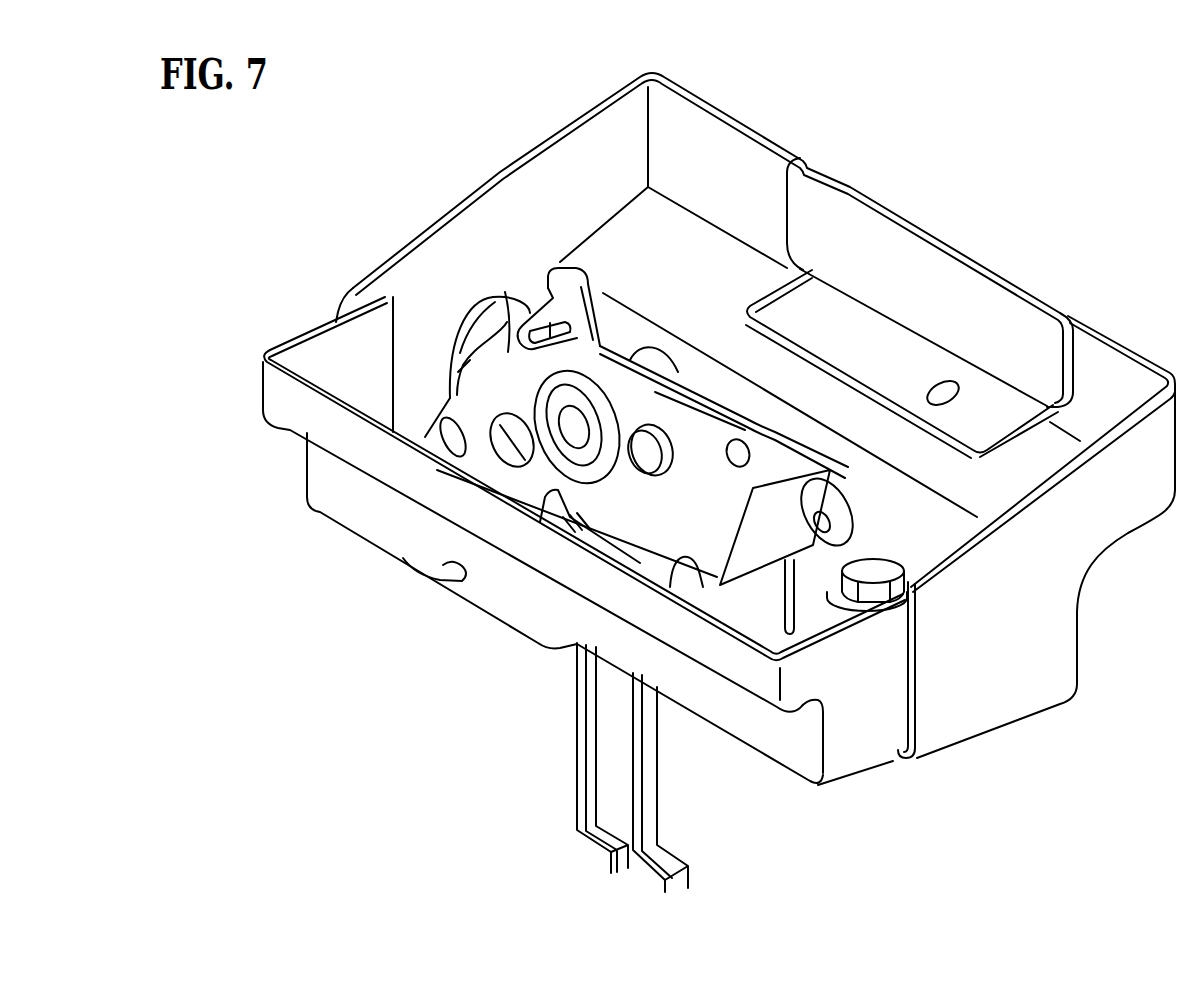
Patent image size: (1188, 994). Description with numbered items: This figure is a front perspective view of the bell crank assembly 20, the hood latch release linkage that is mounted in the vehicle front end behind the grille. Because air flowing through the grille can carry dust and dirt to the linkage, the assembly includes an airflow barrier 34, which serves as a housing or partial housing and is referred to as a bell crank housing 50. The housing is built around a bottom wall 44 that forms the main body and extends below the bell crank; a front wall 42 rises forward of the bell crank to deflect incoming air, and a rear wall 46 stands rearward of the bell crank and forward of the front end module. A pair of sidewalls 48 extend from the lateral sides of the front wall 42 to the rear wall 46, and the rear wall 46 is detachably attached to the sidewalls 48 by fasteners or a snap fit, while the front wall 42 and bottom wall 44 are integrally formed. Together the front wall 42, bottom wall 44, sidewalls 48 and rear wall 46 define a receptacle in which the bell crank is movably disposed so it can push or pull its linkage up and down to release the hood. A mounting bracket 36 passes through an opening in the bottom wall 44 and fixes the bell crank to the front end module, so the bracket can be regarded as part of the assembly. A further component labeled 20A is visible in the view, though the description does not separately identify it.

The bell crank assembly 20 is at (1040, 172).
The mounting bracket 20A is at (505, 292).
The airflow barrier 34 is at (540, 560).
The mounting bracket 36 is at (652, 808).
The front wall 42 is at (385, 510).
The bottom wall 44 is at (912, 542).
The rear wall 46 is at (917, 260).
The sidewalls 48 is at (417, 270).
The bell crank housing 50 is at (380, 628).